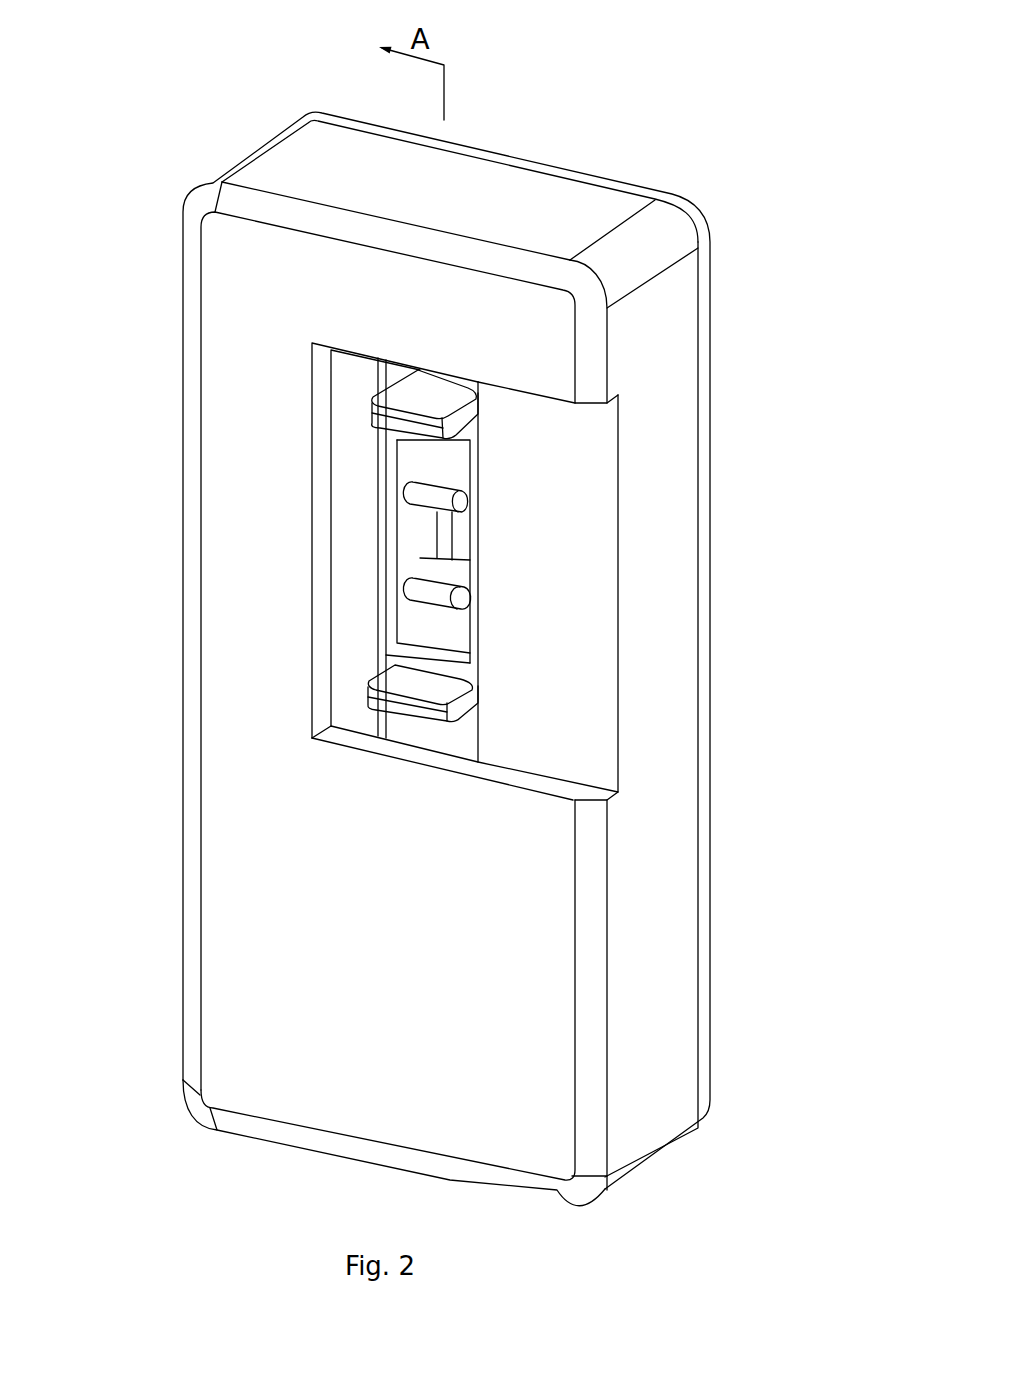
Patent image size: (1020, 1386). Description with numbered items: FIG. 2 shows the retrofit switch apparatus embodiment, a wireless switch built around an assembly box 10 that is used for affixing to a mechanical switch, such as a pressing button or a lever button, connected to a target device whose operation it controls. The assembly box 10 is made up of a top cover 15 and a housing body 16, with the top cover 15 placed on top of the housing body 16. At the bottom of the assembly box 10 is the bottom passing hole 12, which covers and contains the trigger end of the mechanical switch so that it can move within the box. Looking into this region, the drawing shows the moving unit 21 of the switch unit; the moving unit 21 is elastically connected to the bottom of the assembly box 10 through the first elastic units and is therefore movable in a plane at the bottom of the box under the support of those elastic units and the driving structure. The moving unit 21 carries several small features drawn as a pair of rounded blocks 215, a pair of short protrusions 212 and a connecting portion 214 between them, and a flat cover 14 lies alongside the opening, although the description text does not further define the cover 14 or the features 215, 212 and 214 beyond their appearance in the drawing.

The assembly box 10 is at (610, 90).
The top cover 15 is at (573, 175).
The housing body 16 is at (485, 198).
The bottom passing hole 12 is at (462, 735).
The sliding cover 14 is at (555, 683).
The moving unit 21 is at (397, 450).
The positioning blocks 215 is at (380, 412).
The protrusions 212 is at (425, 500).
The connecting portion 214 is at (440, 548).